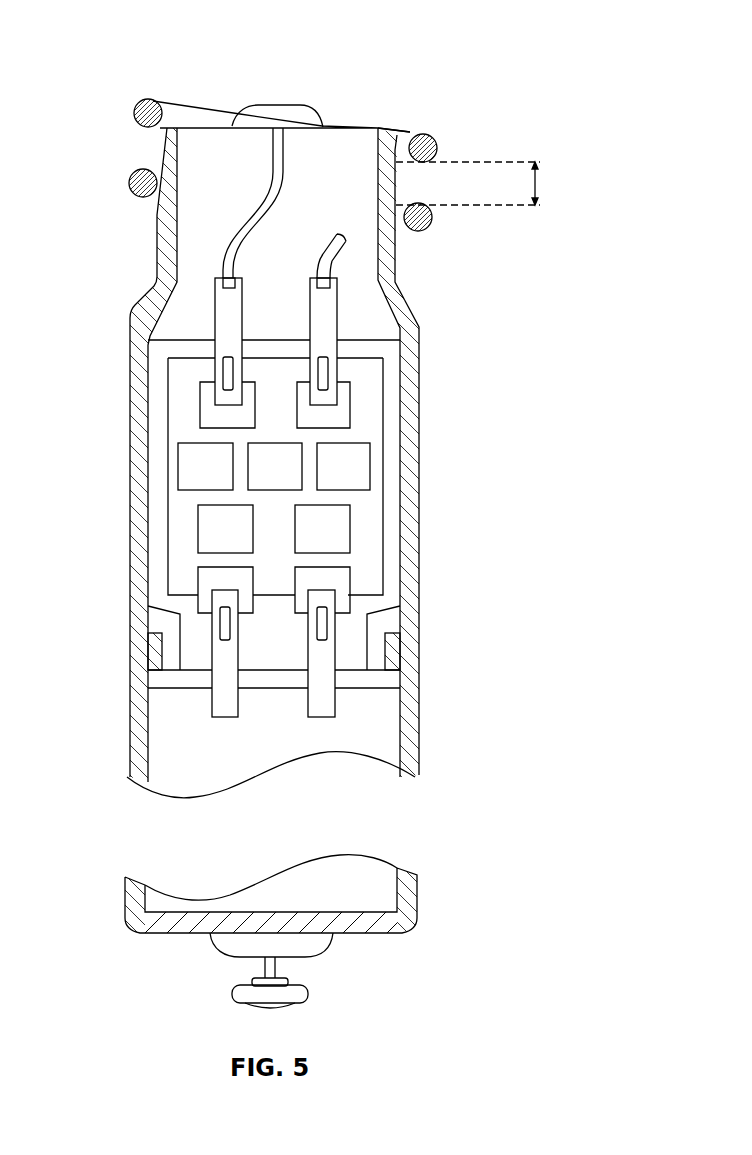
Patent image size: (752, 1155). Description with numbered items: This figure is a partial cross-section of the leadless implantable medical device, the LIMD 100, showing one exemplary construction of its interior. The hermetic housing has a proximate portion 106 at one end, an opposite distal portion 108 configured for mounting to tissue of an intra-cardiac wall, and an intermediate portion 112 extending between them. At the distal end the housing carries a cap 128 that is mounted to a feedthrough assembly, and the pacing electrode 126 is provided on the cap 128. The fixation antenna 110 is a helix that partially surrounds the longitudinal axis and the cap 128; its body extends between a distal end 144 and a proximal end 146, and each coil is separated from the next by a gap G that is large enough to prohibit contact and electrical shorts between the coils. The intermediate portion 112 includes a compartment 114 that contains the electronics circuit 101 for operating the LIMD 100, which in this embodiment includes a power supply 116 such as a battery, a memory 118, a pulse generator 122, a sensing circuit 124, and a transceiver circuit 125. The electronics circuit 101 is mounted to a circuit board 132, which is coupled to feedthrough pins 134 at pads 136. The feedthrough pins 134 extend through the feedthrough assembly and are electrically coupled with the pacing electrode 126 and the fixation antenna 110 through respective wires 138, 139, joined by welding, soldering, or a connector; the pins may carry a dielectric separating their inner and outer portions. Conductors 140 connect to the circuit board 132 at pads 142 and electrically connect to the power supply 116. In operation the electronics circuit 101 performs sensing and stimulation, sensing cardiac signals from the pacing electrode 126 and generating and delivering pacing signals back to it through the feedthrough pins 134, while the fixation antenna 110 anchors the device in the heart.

The LIMD 100 is at (396, 61).
The electronics circuit 101 is at (390, 458).
The proximate portion 106 is at (123, 911).
The distal portion 108 is at (131, 407).
The fixation antenna 110 is at (147, 99).
The intermediate portion 112 is at (142, 303).
The compartment 114 is at (212, 177).
The power supply 116 is at (372, 722).
The memory 118 is at (350, 462).
The pulse generator 122 is at (340, 517).
The sensing circuit 124 is at (253, 442).
The transceiver circuit 125 is at (207, 478).
The pacing electrode 126 is at (282, 87).
The cap 128 is at (398, 263).
The circuit board 132 is at (342, 393).
The feedthrough pins 134 is at (330, 317).
The pads 136 is at (419, 340).
The wire 138 is at (276, 176).
The wire 139 is at (315, 265).
The conductors 140 is at (207, 677).
The pads 142 is at (190, 576).
The distal end 144 is at (170, 102).
The proximal end 146 is at (340, 236).
The gap G is at (546, 185).